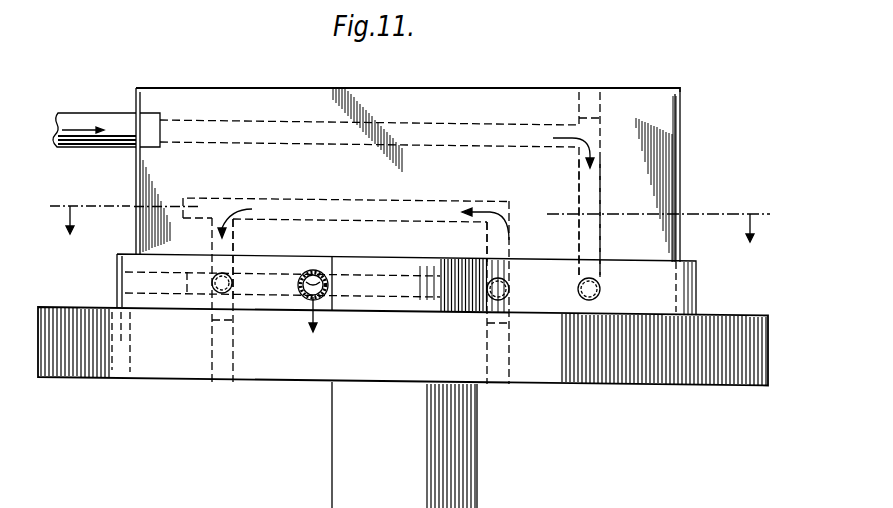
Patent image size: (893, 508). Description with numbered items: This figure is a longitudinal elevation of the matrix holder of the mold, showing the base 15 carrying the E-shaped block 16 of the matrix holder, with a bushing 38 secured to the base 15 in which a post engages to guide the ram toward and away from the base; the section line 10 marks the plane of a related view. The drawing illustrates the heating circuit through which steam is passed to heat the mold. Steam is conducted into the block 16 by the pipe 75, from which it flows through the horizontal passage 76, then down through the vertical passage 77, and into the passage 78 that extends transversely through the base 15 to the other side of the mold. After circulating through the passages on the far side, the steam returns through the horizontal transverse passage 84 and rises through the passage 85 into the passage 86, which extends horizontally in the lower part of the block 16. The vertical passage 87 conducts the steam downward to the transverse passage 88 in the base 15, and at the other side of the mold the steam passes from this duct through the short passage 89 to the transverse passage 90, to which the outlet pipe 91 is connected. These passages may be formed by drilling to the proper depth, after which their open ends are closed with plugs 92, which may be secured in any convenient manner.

The section line 10- 10 is at (411, 212).
The base 15 is at (153, 371).
The E-shaped block 16 is at (487, 96).
The bushing 38 is at (330, 423).
The pipe 75 is at (80, 118).
The horizontal passage 76 is at (229, 124).
The vertical passage 77 is at (597, 208).
The passage 78 is at (602, 298).
The horizontal transverse passage 84 is at (511, 290).
The passage 85 is at (490, 238).
The passage 86 is at (430, 208).
The vertical passage 87 is at (236, 246).
The transverse passage 88 is at (215, 278).
The short passage 89 is at (279, 293).
The transverse passage 90 is at (329, 292).
The outlet pipe 91 is at (313, 270).
The plug 92 is at (590, 95).